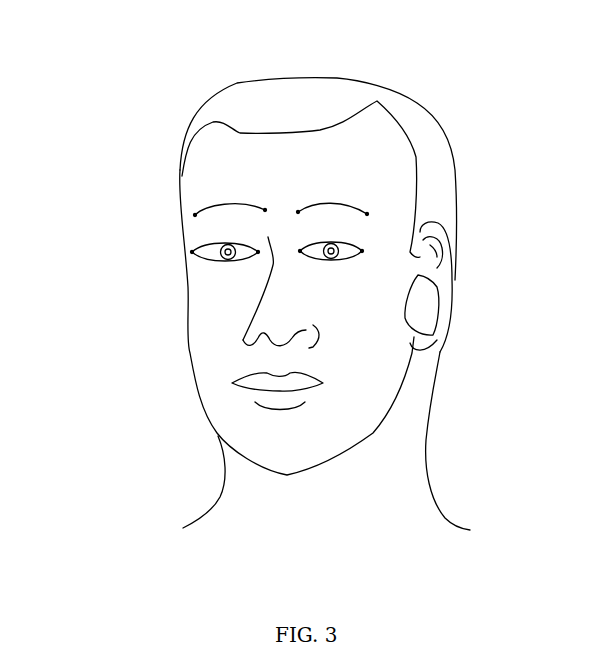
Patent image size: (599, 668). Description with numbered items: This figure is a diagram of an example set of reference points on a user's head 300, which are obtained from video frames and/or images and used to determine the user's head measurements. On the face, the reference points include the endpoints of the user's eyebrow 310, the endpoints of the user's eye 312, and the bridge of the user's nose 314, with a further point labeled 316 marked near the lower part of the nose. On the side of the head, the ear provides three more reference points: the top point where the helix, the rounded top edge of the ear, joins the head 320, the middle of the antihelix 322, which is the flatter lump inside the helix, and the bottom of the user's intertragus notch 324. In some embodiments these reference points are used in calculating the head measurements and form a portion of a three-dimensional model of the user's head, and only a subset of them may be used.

The user's head 300 is at (124, 45).
The user's eyebrow 310 is at (263, 198).
The user's eye 312 is at (256, 266).
The bridge of the user's nose 314 is at (277, 265).
The nostrils / nose tip 316 is at (237, 331).
The top point where the helix joins the head 320 is at (428, 228).
The middle of the antihelix 322 is at (447, 252).
The bottom of the user's intertragus notch 324 is at (417, 326).